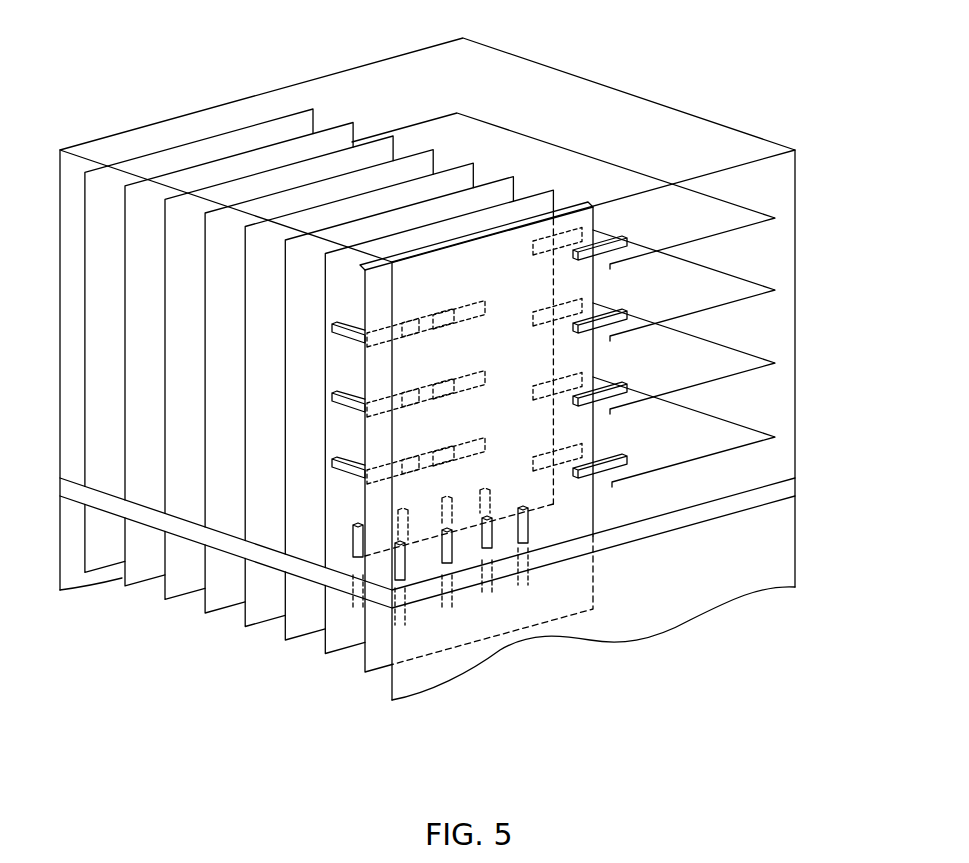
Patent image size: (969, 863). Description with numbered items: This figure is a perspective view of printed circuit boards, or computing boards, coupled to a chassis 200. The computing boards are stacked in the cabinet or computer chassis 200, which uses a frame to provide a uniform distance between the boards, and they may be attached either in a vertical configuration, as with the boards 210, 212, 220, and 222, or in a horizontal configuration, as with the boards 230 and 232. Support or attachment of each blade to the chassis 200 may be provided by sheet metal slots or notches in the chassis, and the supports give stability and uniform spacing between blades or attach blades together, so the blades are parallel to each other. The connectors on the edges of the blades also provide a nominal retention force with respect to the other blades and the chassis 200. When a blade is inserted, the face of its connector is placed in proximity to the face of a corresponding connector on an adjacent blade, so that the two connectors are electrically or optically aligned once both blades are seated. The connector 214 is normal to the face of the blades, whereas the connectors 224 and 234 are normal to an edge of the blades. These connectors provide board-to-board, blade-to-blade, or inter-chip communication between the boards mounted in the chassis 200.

The chassis 200 is at (636, 98).
The vertical computing board 210 is at (178, 163).
The vertical computing board 212 is at (258, 170).
The connector 214 is at (353, 470).
The vertical computing board 220 is at (182, 598).
The vertical computing board 222 is at (230, 610).
The connector 224 is at (450, 563).
The horizontal computing board 230 is at (777, 218).
The horizontal computing board 232 is at (777, 290).
The connector 234 is at (590, 478).